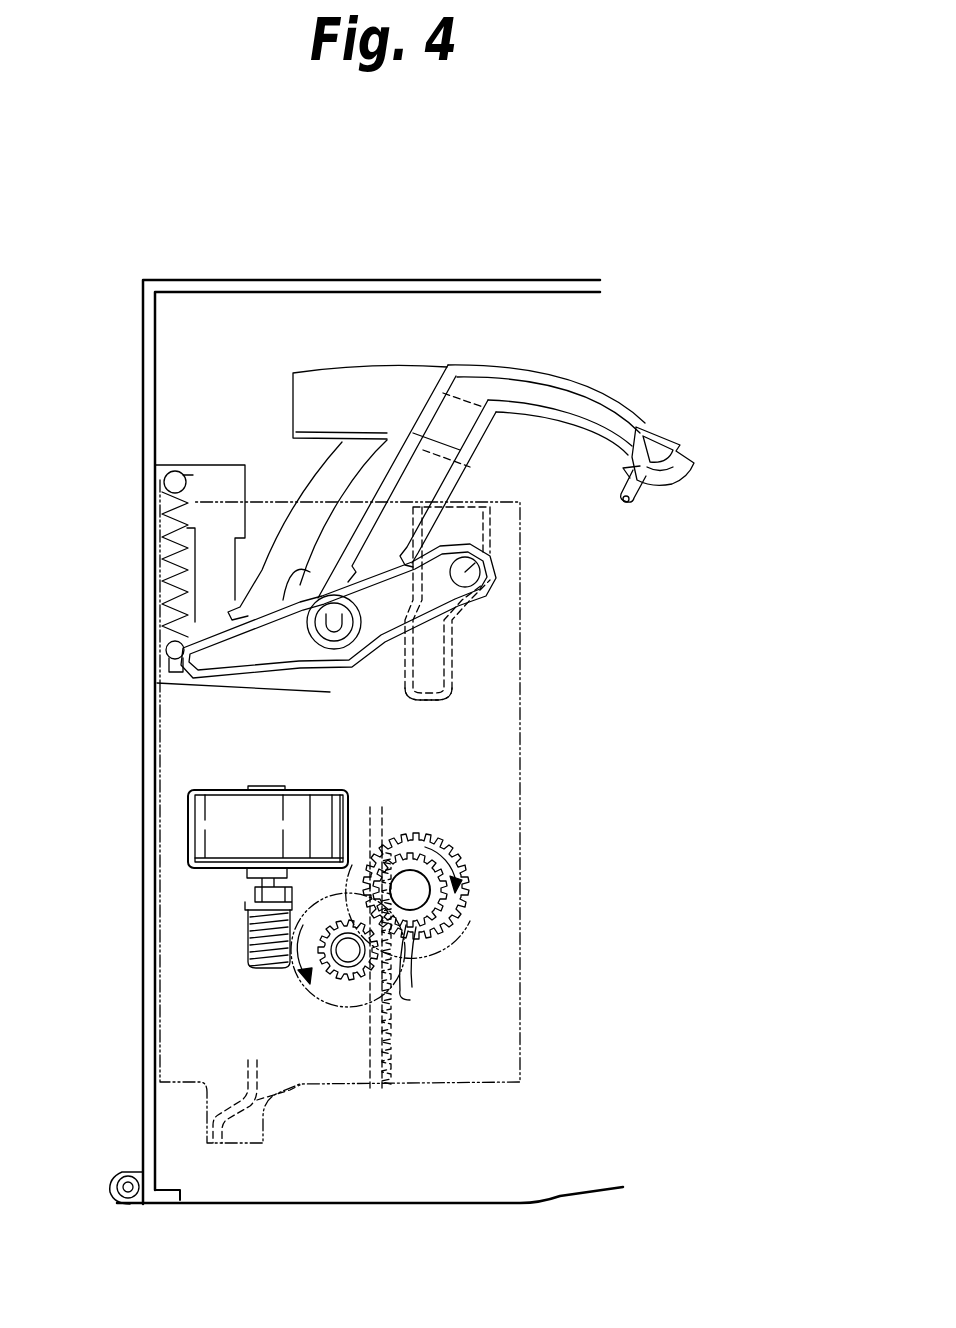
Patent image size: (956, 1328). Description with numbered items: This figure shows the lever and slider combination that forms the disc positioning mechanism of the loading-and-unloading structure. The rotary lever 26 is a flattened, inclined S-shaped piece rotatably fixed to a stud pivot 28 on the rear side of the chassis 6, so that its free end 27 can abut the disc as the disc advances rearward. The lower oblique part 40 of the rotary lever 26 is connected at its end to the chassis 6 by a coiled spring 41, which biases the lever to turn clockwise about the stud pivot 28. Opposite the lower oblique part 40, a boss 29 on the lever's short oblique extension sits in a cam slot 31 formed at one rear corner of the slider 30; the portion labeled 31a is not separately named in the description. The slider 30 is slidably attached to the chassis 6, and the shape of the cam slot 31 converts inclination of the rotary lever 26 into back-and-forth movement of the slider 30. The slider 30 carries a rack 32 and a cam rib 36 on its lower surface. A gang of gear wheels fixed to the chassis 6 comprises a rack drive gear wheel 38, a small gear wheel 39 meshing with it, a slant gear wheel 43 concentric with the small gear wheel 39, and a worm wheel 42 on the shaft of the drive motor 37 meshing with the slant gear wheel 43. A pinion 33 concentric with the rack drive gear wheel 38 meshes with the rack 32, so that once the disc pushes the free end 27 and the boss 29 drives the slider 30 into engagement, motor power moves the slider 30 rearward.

The chassis 6 is at (143, 343).
The rotary lever 26 is at (562, 377).
The free end 27 is at (668, 484).
The stud pivot 28 is at (352, 645).
The boss 29 is at (490, 572).
The slider 30 is at (518, 755).
The cam slot 31 is at (450, 642).
The engaging portion 31a is at (440, 690).
The rack 32 is at (392, 1037).
The pinion 33 is at (464, 897).
The cam rib 36 is at (280, 1090).
The drive motor 37 is at (222, 813).
The rack drive gear wheel 38 is at (460, 852).
The small gear wheel 39 is at (327, 987).
The lower oblique part 40 is at (262, 650).
The coiled spring 41 is at (156, 565).
The worm wheel 42 is at (247, 932).
The slant gear wheel 43 is at (400, 995).